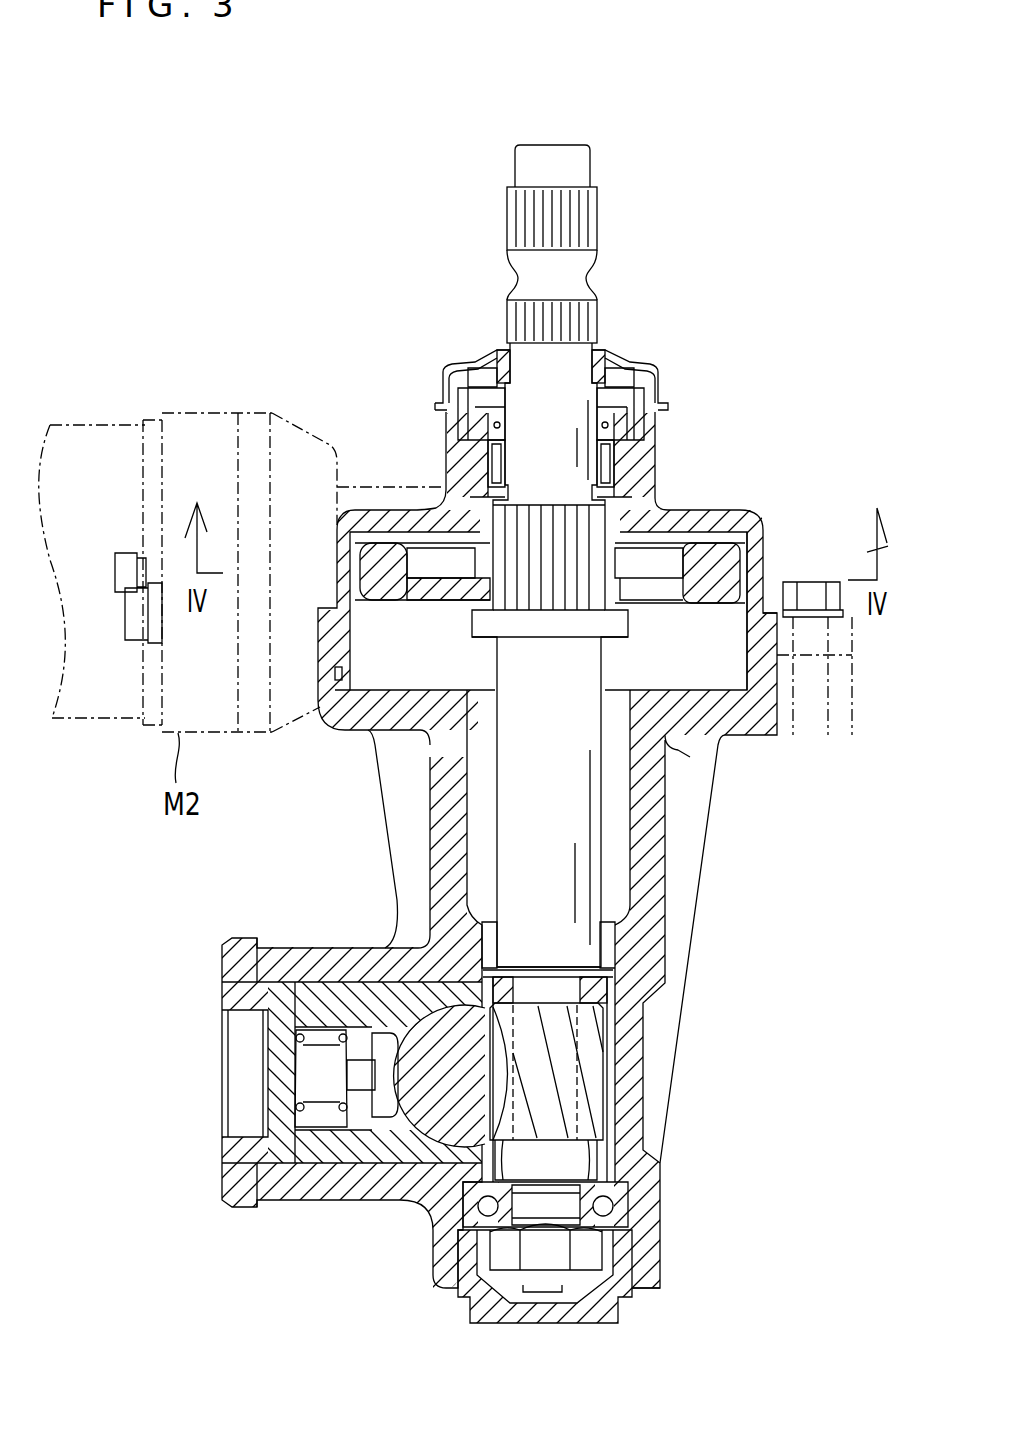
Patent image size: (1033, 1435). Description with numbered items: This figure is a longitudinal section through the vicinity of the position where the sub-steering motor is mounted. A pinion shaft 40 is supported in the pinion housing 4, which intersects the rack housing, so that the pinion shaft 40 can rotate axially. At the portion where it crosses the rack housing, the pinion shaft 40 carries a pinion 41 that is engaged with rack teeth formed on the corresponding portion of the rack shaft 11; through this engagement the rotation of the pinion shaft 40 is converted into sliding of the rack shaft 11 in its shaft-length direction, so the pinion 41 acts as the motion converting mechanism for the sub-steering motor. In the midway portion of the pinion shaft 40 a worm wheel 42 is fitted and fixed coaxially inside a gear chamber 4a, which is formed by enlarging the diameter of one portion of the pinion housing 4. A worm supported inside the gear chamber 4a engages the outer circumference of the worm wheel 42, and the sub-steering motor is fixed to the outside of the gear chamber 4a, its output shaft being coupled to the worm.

The pinion housing 4 is at (658, 905).
The gear chamber 4a is at (738, 621).
The rack shaft 11 is at (402, 1090).
The pinion shaft 40 is at (587, 807).
The pinion 41 is at (582, 1097).
The worm wheel 42 is at (713, 552).